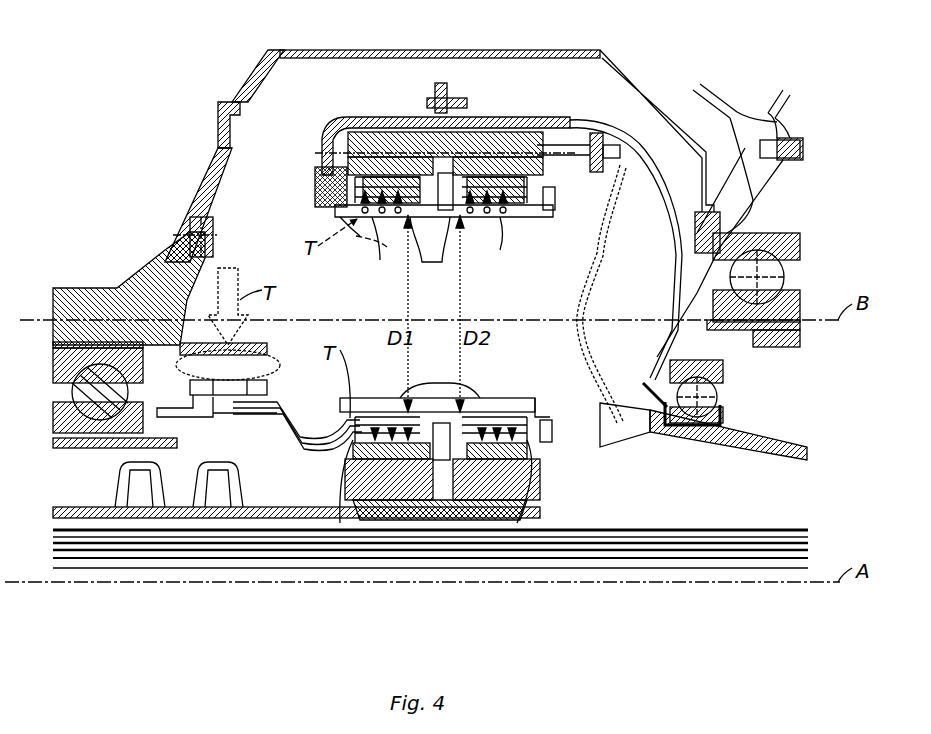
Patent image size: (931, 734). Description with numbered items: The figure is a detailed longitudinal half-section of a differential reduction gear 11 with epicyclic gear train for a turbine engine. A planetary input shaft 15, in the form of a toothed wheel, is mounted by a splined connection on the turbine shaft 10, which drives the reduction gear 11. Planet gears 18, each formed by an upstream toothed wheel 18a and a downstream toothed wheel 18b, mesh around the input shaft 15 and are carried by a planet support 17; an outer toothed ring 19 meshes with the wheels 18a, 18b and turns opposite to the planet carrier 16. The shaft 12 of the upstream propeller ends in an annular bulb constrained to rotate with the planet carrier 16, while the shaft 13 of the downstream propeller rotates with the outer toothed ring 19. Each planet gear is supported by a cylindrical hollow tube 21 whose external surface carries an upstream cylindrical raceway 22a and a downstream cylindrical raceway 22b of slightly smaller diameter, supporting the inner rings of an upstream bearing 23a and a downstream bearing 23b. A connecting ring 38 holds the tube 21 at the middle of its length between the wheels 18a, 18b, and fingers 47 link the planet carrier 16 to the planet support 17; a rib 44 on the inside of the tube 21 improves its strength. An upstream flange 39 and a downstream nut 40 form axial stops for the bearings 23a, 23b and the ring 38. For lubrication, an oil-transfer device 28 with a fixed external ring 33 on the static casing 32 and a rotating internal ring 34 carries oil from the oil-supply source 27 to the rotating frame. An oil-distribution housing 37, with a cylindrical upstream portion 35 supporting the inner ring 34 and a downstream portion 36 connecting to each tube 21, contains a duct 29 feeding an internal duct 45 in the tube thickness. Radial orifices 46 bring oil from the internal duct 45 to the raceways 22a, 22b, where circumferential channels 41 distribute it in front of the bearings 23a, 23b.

The turbine shaft 10 is at (78, 515).
The differential reduction gear 11 is at (628, 479).
The shaft of the upstream propeller 12 is at (778, 335).
The shaft of the downstream propeller 13 is at (772, 438).
The planetary input shaft 15 is at (545, 500).
The planet carrier 16 is at (390, 113).
The planet support 17 is at (476, 250).
The planet gears 18 is at (481, 618).
The upstream toothed wheel 18a is at (335, 152).
The downstream toothed wheel 18b is at (508, 150).
The outer toothed ring 19 is at (493, 137).
The supporting member 21 is at (540, 216).
The upstream cylindrical raceway 22a is at (390, 220).
The downstream cylindrical raceway 22b is at (510, 218).
The upstream bearing 23a is at (357, 117).
The downstream bearing 23b is at (548, 175).
The oil-supply source 27 is at (228, 266).
The oil-transfer device 28 is at (170, 362).
The cavity / duct 29 is at (300, 420).
The fixed casing 32 is at (150, 262).
The external ring 33 is at (70, 337).
The internal ring 34 is at (53, 430).
The upstream portion 35 is at (203, 408).
The downstream portion 36 is at (306, 438).
The oil-distribution housing 37 is at (265, 438).
The connecting ring 38 is at (430, 150).
The upstream flange 39 is at (315, 176).
The nut 40 is at (556, 193).
The circumferential channels 41 is at (385, 218).
The rib 44 is at (432, 262).
The internal duct 45 is at (352, 425).
The radial orifices 46 is at (530, 450).
The fingers 47 is at (345, 212).